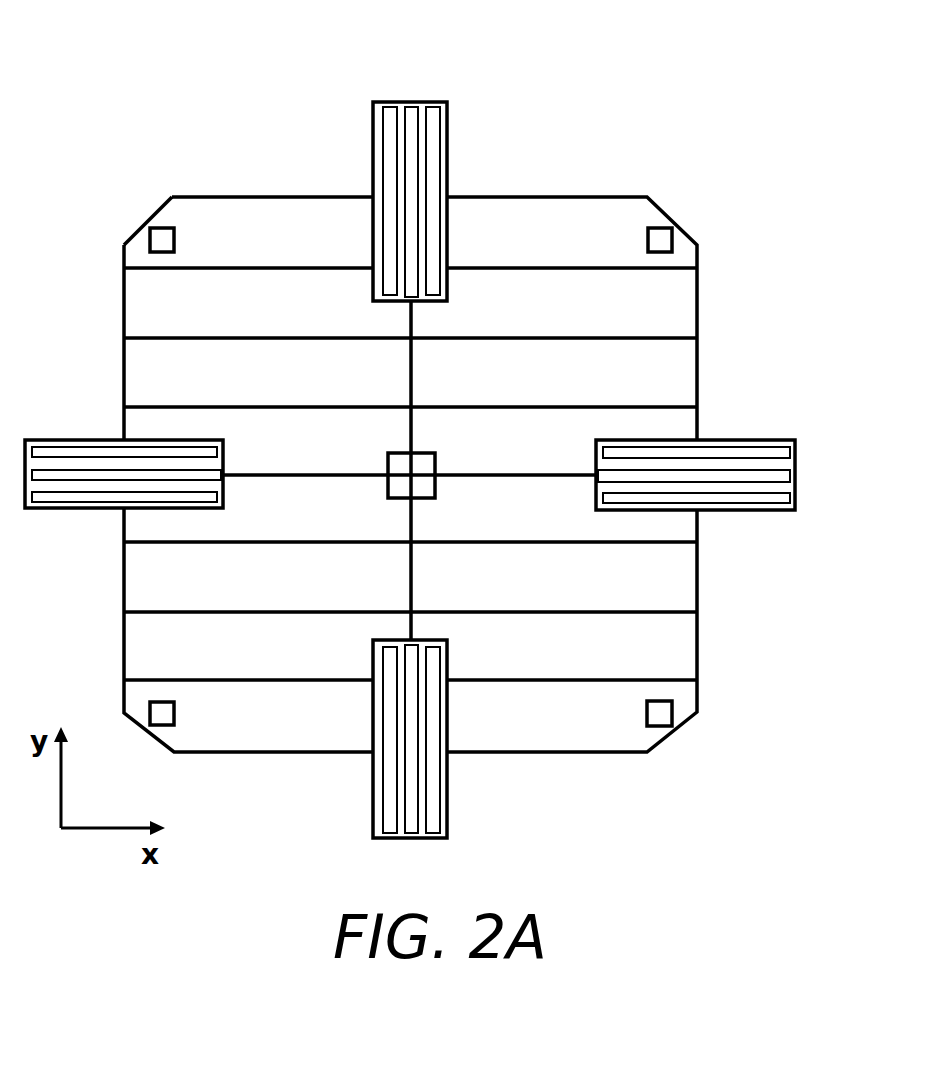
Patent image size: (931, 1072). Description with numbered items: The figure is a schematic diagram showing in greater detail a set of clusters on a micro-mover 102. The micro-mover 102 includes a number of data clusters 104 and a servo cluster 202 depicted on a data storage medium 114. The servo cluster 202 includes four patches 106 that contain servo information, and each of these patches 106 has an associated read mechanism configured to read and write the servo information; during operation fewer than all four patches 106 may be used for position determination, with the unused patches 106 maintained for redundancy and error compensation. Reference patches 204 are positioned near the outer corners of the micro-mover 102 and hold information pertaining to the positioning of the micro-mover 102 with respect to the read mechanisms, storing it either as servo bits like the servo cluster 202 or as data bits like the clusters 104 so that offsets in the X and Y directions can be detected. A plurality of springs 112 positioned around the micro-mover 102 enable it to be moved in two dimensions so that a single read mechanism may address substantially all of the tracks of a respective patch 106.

The micro-mover 102 is at (148, 95).
The data cluster 104 is at (525, 227).
The patch 106 is at (385, 462).
The spring 112 is at (375, 778).
The data storage medium 114 is at (165, 205).
The servo cluster 202 is at (447, 458).
The reference patch 204 is at (681, 237).